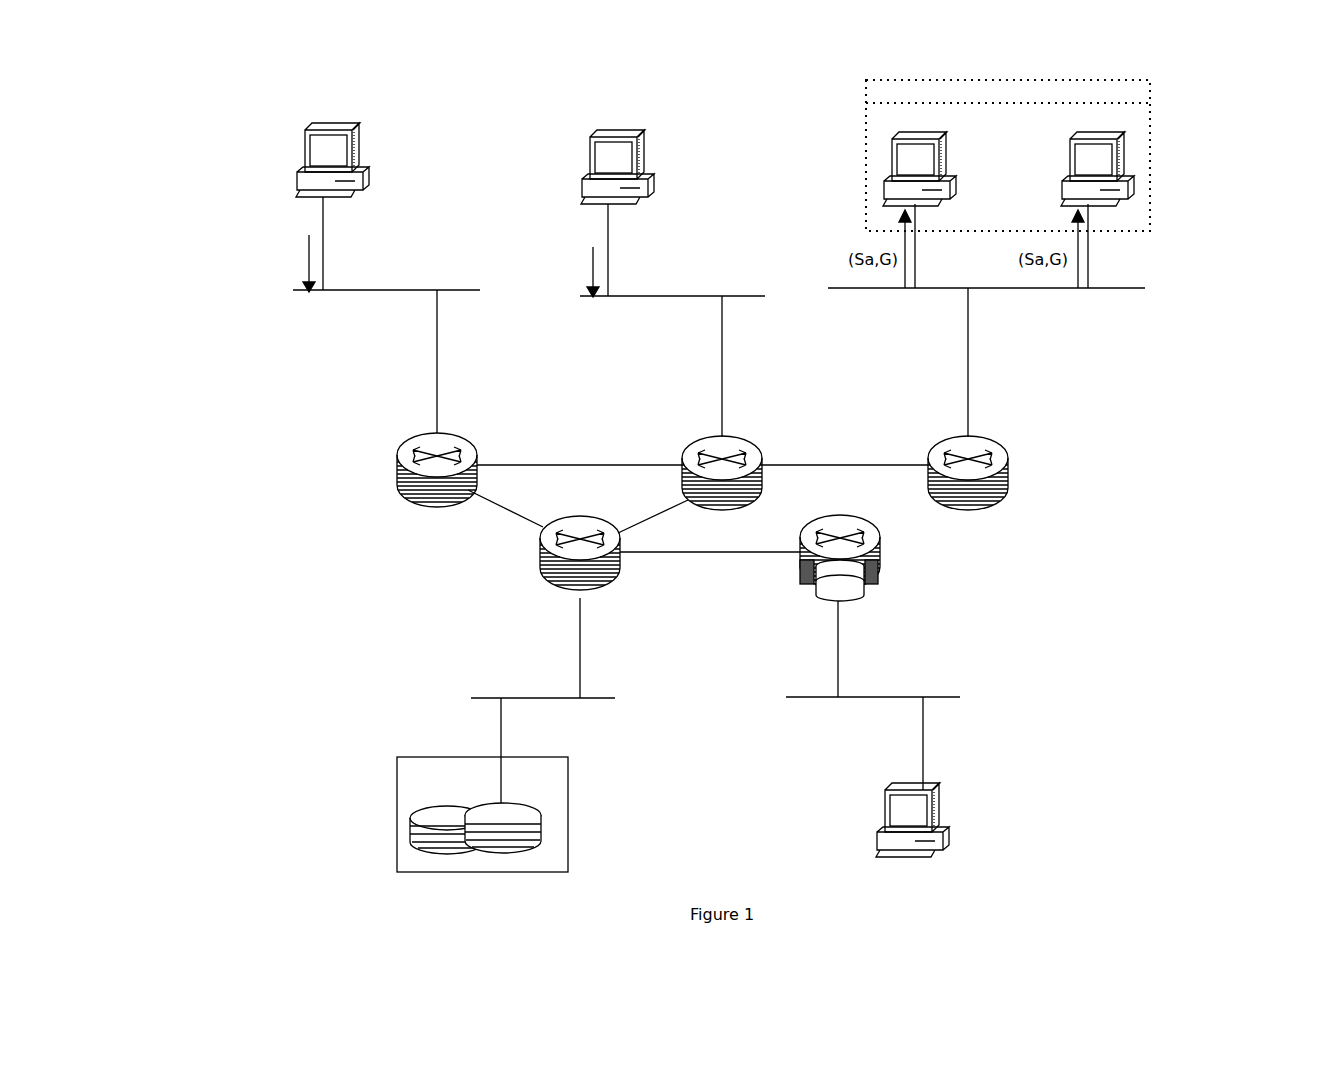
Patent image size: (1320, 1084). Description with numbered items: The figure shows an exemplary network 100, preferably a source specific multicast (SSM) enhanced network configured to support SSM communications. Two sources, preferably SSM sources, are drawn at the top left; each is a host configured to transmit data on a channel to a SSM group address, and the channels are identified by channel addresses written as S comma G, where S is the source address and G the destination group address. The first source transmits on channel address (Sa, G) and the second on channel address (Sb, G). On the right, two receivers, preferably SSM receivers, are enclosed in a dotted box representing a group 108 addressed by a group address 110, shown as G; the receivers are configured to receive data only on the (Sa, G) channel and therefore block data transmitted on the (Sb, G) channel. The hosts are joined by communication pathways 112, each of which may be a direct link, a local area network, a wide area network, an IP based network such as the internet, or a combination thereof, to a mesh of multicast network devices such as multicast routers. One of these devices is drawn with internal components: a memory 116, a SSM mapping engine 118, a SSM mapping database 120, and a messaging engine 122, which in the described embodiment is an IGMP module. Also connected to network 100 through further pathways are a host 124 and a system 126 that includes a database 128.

The network 100 is at (1067, 697).
The group 108 is at (1153, 215).
The group address 110 is at (1008, 149).
The communication pathway 112 is at (560, 465).
The memory 116 is at (800, 566).
The SSM mapping engine 118 is at (845, 600).
The SSM mapping database 120 is at (870, 572).
The messaging engine 122 is at (860, 597).
The host 124 is at (935, 785).
The system 126 is at (514, 833).
The database 128 is at (508, 855).